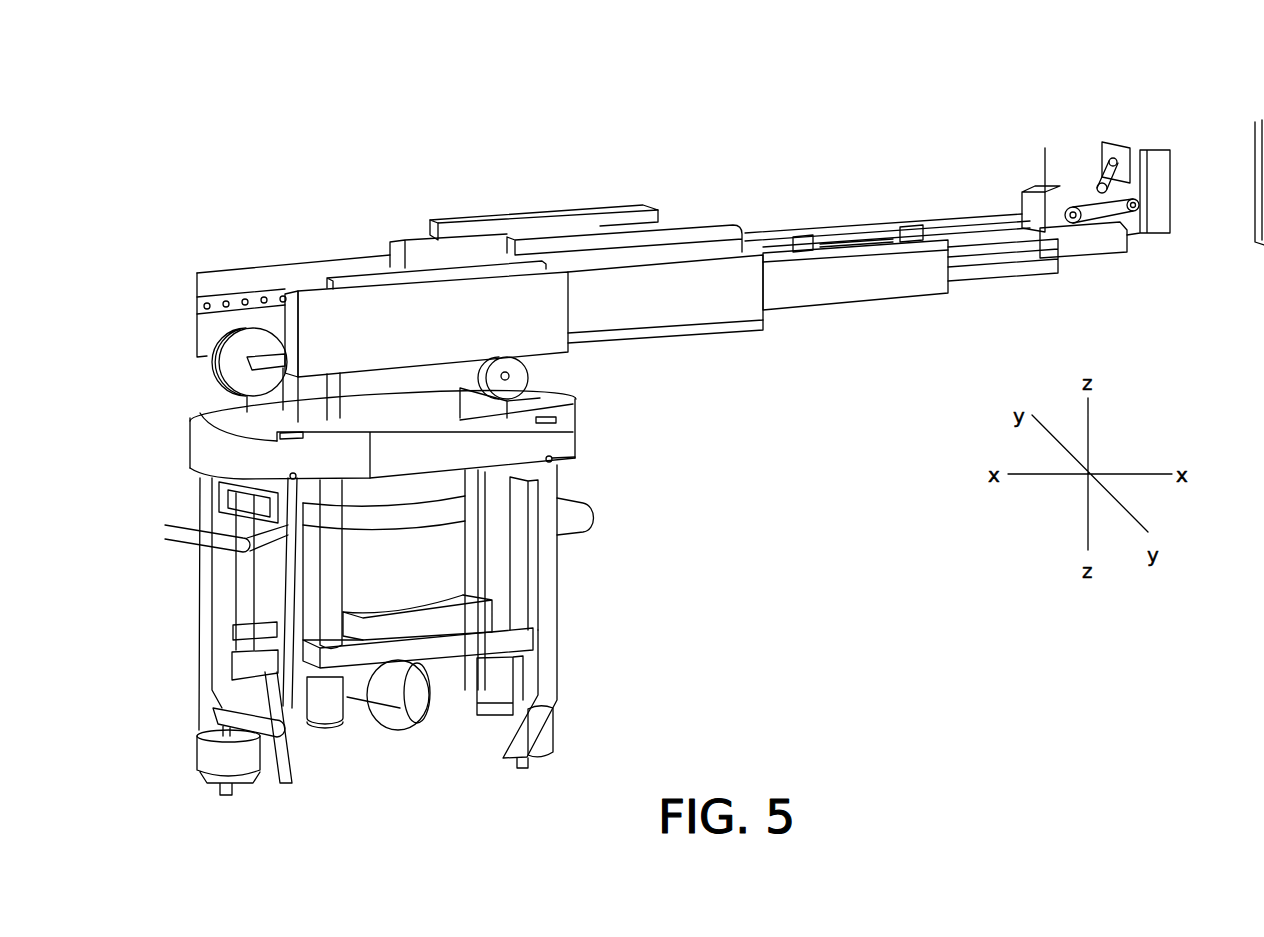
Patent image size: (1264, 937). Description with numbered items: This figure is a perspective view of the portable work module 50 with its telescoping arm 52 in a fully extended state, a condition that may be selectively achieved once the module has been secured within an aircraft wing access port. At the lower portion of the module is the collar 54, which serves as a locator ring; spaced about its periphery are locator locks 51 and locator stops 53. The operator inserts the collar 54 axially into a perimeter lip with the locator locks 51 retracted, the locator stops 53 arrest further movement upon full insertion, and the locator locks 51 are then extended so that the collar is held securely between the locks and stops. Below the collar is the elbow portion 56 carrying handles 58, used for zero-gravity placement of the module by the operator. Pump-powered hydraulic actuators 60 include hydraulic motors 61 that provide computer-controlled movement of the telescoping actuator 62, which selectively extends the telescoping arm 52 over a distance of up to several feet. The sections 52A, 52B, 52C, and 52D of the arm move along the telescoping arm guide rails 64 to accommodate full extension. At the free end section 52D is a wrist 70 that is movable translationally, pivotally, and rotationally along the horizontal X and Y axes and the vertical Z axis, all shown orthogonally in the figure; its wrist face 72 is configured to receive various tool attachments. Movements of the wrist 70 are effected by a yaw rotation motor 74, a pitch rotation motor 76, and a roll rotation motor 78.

The portable work module 50 is at (171, 318).
The locator locks 51 is at (197, 434).
The telescoping arm 52 is at (748, 199).
The first section of telescoping arm 52A is at (426, 341).
The second section of telescoping arm 52B is at (635, 284).
The third section of telescoping arm 52C is at (855, 267).
The free end section of telescoping arm 52D is at (1008, 268).
The locator stops 53 is at (197, 477).
The collar 54 is at (562, 435).
The elbow portion 56 is at (597, 580).
The handles 58 is at (587, 518).
The pump-powered hydraulic actuators 60 is at (422, 586).
The hydraulic motors 61 is at (492, 702).
The telescoping actuator 62 is at (518, 382).
The telescoping arm guide rails 64 is at (240, 297).
The wrist 70 is at (1168, 209).
The wrist face 72 is at (1187, 156).
The yaw rotation motor 74 is at (1095, 242).
The pitch rotation motor 76 is at (1045, 162).
The roll rotation motor 78 is at (1093, 173).